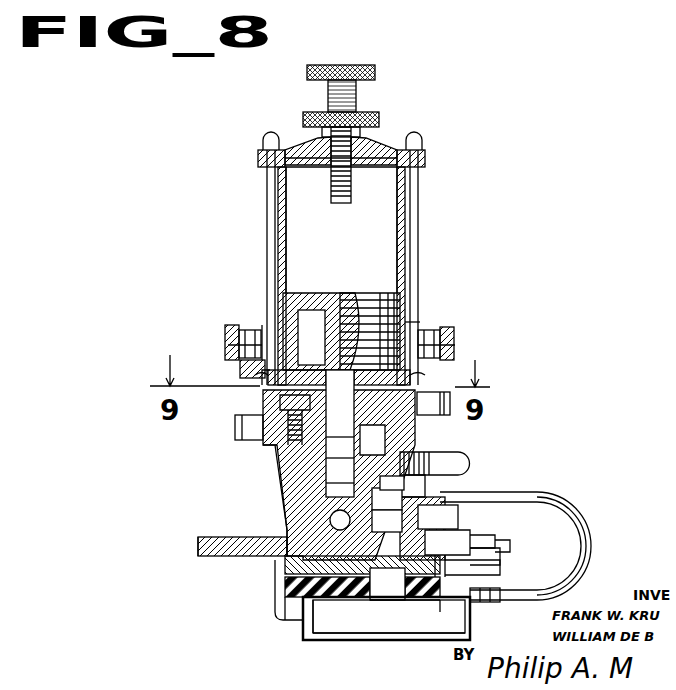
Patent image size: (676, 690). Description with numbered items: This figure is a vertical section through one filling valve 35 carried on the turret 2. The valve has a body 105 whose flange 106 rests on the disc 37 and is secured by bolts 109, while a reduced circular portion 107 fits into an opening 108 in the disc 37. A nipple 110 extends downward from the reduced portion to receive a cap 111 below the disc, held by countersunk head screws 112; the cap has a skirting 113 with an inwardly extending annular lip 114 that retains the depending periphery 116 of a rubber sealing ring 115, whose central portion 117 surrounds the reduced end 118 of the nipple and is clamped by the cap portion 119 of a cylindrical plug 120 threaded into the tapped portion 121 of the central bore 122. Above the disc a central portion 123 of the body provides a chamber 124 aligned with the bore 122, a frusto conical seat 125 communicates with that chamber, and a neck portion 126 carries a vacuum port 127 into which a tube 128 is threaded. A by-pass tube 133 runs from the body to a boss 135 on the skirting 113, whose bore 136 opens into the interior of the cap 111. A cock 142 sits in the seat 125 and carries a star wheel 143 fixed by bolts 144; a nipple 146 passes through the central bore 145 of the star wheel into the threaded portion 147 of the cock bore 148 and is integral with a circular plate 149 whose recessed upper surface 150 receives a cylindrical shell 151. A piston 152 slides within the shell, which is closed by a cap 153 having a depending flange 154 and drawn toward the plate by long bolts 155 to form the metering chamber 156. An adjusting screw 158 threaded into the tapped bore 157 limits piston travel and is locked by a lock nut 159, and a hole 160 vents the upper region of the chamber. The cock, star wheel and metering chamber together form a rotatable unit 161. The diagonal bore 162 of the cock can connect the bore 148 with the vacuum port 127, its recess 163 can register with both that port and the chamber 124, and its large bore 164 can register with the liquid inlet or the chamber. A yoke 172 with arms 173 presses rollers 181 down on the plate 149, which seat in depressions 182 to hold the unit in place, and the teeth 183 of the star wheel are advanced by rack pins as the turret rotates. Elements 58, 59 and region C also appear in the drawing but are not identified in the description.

The turret 2 is at (187, 544).
The filling valve 35 is at (432, 324).
The disc 37 is at (198, 554).
The cup 58 is at (346, 641).
The cup wall 59 is at (300, 636).
The chamber C is at (412, 636).
The body 105 is at (265, 482).
The flange 106 is at (495, 530).
The reduced circular portion 107 is at (492, 560).
The opening 108 is at (510, 546).
The bolts 109 is at (490, 492).
The nipple 110 is at (447, 553).
The cap 111 is at (285, 580).
The countersunk head screws 112 is at (525, 590).
The skirting 113 is at (285, 600).
The annular lip 114 is at (290, 620).
The rubber sealing ring 115 is at (331, 616).
The depending periphery 116 is at (283, 612).
The central portion 117 is at (432, 602).
The reduced end 118 is at (402, 588).
The cap portion 119 is at (410, 605).
The cylindrical plug 120 is at (402, 600).
The tapped portion 121 is at (387, 521).
The central bore 122 is at (438, 517).
The central portion 123 is at (387, 499).
The chamber 124 is at (430, 500).
The frusto conical seat formation 125 is at (292, 495).
The neck portion 126 is at (471, 461).
The vacuum port 127 is at (430, 452).
The tube 128 is at (435, 463).
The by-pass tube 133 is at (590, 530).
The boss 135 is at (500, 612).
The bore 136 is at (451, 604).
The cock 142 is at (283, 455).
The star wheel 143 is at (250, 428).
The bolts 144 is at (278, 445).
The central bore 145 is at (352, 415).
The nipple 146 is at (352, 437).
The threaded portion 147 is at (352, 458).
The bore 148 is at (352, 483).
The circular plate 149 is at (248, 366).
The recessed upper surface 150 is at (268, 365).
The cylindrical shell 151 is at (278, 228).
The piston 152 is at (340, 290).
The cap 153 is at (425, 160).
The depending flange 154 is at (286, 166).
The long bolts 155 is at (276, 268).
The metering chamber 156 is at (385, 215).
The tapped bore 157 is at (364, 163).
The adjusting screw 158 is at (355, 100).
The lock nut 159 is at (380, 120).
The hole 160 is at (300, 147).
The unit 161 is at (258, 325).
The diagonal bore 162 is at (390, 462).
The recess 163 is at (393, 483).
The large bore 164 is at (330, 520).
The yoke 172 is at (230, 346).
The arms 173 is at (232, 332).
The roller 181 is at (236, 333).
The depressions 182 is at (262, 378).
The teeth 183 is at (248, 415).